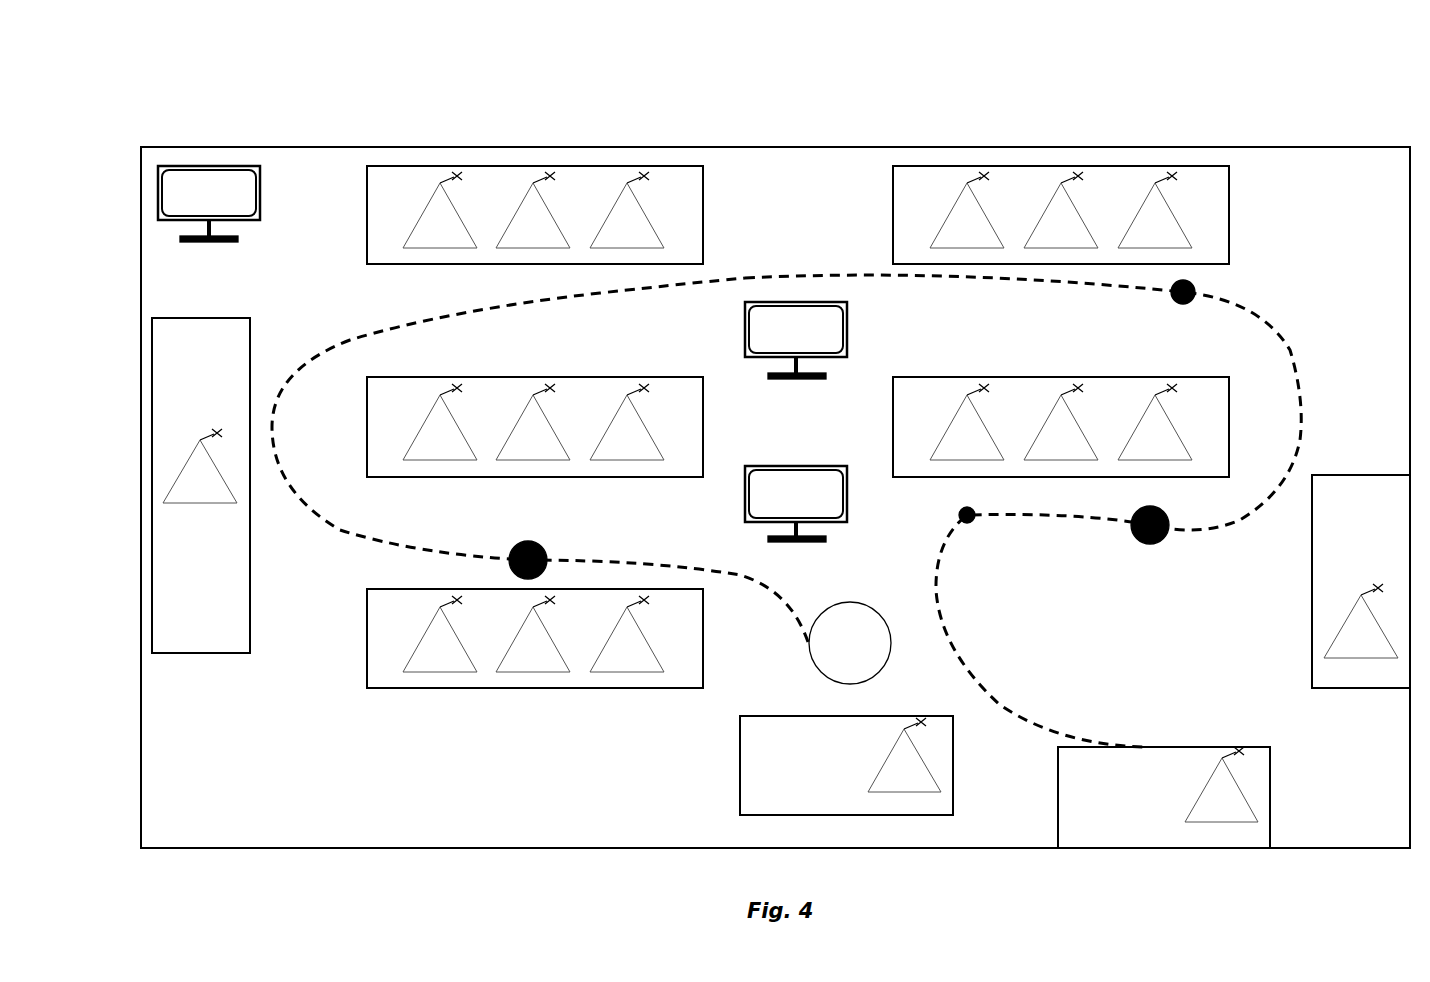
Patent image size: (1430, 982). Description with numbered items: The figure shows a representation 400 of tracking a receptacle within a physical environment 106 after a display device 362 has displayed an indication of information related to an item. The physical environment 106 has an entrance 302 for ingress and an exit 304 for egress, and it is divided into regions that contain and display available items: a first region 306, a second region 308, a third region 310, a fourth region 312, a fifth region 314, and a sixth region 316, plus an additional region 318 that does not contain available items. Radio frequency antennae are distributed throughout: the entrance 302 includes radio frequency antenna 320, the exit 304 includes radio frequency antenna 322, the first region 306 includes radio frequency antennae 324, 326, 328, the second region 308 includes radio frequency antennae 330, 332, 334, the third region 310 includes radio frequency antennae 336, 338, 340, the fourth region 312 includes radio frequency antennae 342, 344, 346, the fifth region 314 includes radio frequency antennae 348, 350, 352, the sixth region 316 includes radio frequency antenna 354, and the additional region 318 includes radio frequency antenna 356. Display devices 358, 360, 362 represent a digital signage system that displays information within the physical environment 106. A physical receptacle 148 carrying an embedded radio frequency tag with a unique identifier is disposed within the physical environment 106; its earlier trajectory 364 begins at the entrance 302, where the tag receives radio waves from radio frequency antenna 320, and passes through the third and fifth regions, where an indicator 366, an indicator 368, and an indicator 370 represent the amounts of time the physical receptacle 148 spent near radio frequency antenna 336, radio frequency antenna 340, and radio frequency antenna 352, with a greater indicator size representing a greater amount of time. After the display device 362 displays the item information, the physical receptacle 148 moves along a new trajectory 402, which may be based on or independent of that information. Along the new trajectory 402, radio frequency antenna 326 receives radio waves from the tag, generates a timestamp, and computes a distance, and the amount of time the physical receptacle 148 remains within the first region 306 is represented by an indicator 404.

The representation 400 is at (194, 90).
The physical environment 106 is at (203, 817).
The physical receptacle 148 is at (830, 654).
The entrance 302 is at (1120, 798).
The exit 304 is at (1378, 519).
The first region 306 is at (417, 625).
The second region 308 is at (417, 413).
The third region 310 is at (943, 413).
The fourth region 312 is at (417, 202).
The fifth region 314 is at (943, 202).
The sixth region 316 is at (218, 364).
The additional region 318 is at (803, 766).
The radio frequency antenna 320 is at (1202, 818).
The radio frequency antenna 322 is at (1341, 653).
The radio frequency antenna 324 is at (420, 666).
The radio frequency antenna 326 is at (513, 666).
The radio frequency antenna 328 is at (607, 666).
The radio frequency antenna 330 is at (420, 454).
The radio frequency antenna 332 is at (513, 454).
The radio frequency antenna 334 is at (607, 454).
The radio frequency antenna 336 is at (947, 454).
The radio frequency antenna 338 is at (1041, 454).
The radio frequency antenna 340 is at (1135, 454).
The radio frequency antenna 342 is at (420, 242).
The radio frequency antenna 344 is at (513, 242).
The radio frequency antenna 346 is at (607, 242).
The radio frequency antenna 348 is at (947, 242).
The radio frequency antenna 350 is at (1041, 242).
The radio frequency antenna 352 is at (1135, 242).
The radio frequency antenna 354 is at (180, 498).
The radio frequency antenna 356 is at (884, 787).
The display device 358 is at (776, 507).
The display device 360 is at (776, 342).
The display device 362 is at (189, 205).
The trajectory 364 is at (750, 277).
The indicator 366 is at (974, 523).
The indicator 368 is at (1165, 540).
The indicator 370 is at (1178, 302).
The new trajectory 402 is at (376, 538).
The indicator 404 is at (542, 546).